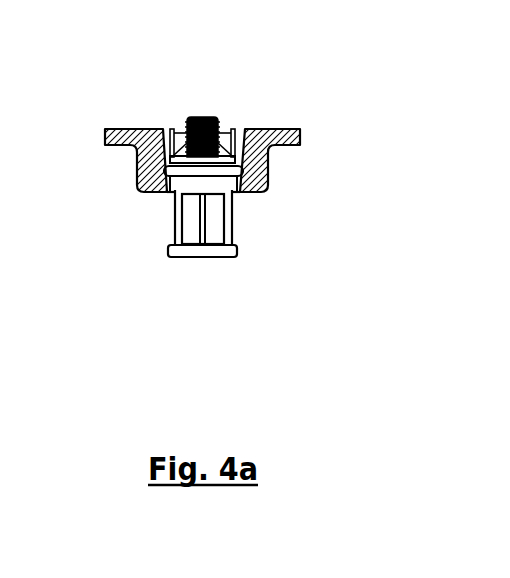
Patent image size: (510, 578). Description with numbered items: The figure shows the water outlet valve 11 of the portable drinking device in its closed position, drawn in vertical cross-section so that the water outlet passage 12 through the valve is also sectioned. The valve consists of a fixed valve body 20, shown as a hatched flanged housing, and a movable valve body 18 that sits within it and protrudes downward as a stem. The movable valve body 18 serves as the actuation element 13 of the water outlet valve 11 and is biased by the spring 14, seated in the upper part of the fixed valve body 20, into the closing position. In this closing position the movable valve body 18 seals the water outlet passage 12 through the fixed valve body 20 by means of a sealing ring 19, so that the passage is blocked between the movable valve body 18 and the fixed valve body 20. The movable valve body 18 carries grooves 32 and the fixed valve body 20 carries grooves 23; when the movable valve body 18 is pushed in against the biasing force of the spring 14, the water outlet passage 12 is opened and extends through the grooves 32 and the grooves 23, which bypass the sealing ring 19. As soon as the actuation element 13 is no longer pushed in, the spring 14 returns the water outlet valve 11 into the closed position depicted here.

The water outlet valve 11 is at (293, 208).
The water outlet passage 12 is at (165, 129).
The actuation element 13 is at (203, 257).
The spring 14 is at (212, 117).
The movable valve body 18 is at (232, 257).
The sealing ring 19 is at (180, 172).
The fixed valve body 20 is at (148, 178).
The grooves in the fixed valve body 23 is at (247, 129).
The grooves in the movable valve body 32 is at (215, 212).